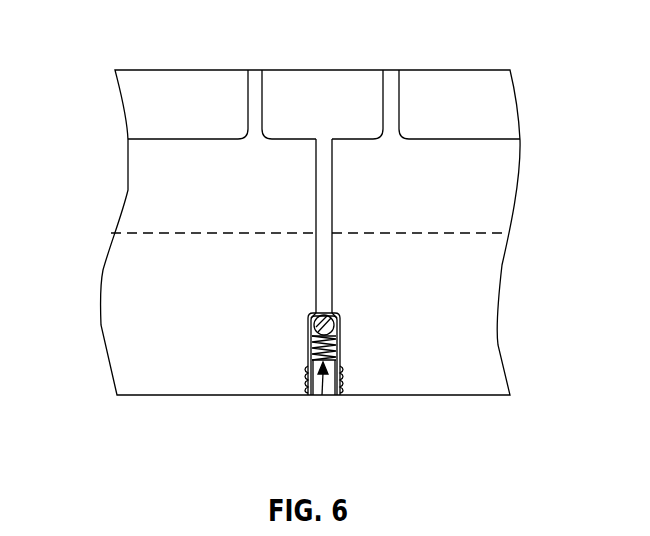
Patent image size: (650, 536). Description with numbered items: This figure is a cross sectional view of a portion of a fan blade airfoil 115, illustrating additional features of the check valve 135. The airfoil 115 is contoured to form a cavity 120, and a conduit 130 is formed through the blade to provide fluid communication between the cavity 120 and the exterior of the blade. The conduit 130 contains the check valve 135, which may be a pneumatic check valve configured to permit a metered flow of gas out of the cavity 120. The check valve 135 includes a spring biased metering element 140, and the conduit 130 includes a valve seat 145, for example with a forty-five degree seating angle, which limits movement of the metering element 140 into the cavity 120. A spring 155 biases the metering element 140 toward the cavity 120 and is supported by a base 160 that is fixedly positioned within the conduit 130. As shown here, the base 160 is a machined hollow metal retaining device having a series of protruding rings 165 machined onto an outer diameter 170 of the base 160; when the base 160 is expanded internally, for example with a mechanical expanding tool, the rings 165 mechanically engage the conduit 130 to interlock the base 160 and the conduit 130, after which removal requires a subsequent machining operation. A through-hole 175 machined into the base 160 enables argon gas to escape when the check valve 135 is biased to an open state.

The airfoil 115 is at (122, 330).
The cavity 120 is at (331, 80).
The conduit 130 is at (323, 193).
The check valve 135 is at (262, 338).
The metering element 140 is at (333, 318).
The valve seat 145 is at (313, 316).
The spring 155 is at (338, 346).
The base 160 is at (338, 392).
The protruding rings 165 is at (343, 384).
The outer diameter 170 is at (313, 392).
The through-hole 175 is at (322, 395).